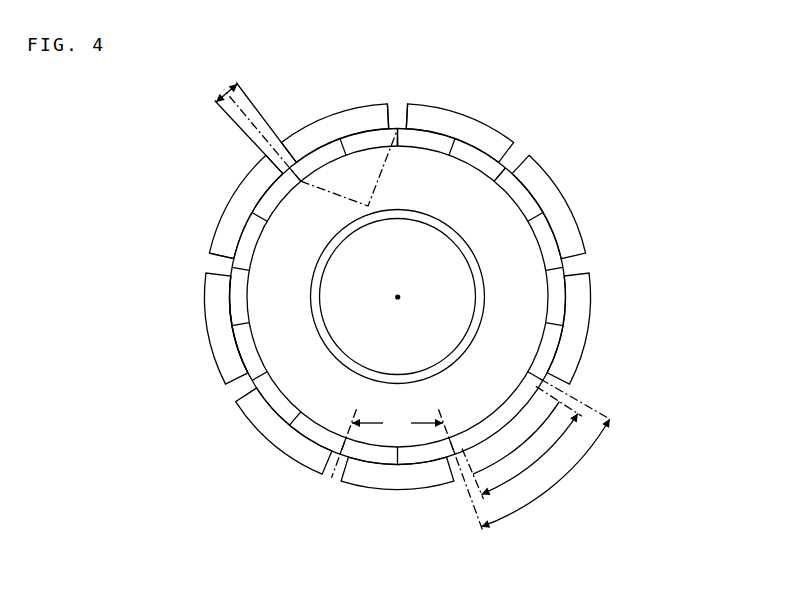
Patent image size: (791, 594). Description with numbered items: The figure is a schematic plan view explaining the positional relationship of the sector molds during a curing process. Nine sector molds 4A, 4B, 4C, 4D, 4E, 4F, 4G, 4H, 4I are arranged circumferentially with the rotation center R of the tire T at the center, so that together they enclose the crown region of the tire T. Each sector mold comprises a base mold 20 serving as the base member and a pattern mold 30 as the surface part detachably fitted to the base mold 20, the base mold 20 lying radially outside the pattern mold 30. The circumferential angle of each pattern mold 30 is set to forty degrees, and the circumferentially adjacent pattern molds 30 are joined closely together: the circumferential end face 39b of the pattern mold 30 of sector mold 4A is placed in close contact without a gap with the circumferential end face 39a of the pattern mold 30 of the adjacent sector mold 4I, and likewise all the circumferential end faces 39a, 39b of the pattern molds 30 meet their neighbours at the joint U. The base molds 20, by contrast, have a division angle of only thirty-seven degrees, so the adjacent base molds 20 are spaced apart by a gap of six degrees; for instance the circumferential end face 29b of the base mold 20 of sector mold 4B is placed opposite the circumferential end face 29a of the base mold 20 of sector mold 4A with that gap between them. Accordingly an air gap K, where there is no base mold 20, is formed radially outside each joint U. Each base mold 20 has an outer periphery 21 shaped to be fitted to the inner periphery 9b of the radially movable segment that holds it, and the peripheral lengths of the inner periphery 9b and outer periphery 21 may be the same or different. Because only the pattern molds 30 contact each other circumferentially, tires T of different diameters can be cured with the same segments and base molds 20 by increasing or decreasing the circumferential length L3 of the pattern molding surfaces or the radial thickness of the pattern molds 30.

The base mold 20 is at (352, 157).
The outer periphery of the base mold 21 is at (188, 325).
The circumferential end face of the base mold 29a is at (283, 139).
The circumferential end face of the base mold 29b is at (388, 104).
The pattern mold 30 is at (398, 261).
The circumferential end face of the pattern mold 39a is at (398, 128).
The circumferential end face of the pattern mold 39b is at (398, 141).
The inner periphery of the segment 9b is at (232, 339).
The sector mold 4A is at (315, 110).
The sector mold 4B is at (211, 217).
The sector mold 4C is at (198, 346).
The sector mold 4D is at (266, 468).
The sector mold 4E is at (405, 518).
The sector mold 4F is at (592, 515).
The sector mold 4G is at (614, 338).
The sector mold 4H is at (593, 203).
The sector mold 4I is at (461, 109).
The air gap K is at (630, 259).
The joint U is at (349, 169).
The tire T is at (523, 292).
The rotation center R is at (391, 298).
The circumferential length of the pattern molding surface L3 is at (397, 424).